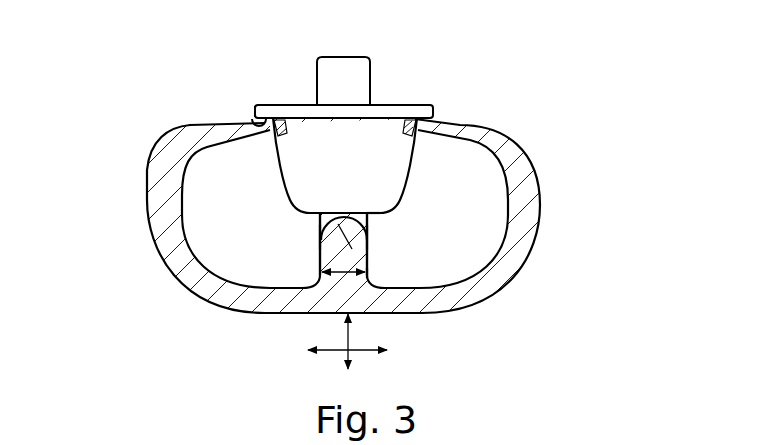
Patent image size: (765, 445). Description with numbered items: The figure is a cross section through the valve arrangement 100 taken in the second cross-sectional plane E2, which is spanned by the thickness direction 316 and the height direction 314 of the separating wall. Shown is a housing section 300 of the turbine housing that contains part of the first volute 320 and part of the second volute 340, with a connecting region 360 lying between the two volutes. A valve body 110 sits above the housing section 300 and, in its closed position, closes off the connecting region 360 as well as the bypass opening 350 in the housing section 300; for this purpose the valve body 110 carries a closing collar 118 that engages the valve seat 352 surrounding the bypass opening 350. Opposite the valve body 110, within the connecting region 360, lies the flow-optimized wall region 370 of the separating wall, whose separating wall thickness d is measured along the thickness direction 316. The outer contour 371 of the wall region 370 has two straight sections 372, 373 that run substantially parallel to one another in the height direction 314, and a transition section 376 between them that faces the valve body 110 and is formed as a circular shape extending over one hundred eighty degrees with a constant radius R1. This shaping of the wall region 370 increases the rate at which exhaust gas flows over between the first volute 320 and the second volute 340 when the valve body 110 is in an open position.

The valve arrangement 100 is at (211, 89).
The valve body 110 is at (434, 103).
The closing collar 118 is at (263, 107).
The housing section 300 is at (535, 222).
The height direction 314 is at (347, 327).
The thickness direction 316 is at (366, 351).
The first volute 320 is at (193, 188).
The second volute 340 is at (493, 178).
The bypass opening 350 is at (268, 134).
The valve seat 352 is at (261, 124).
The connecting region 360 is at (372, 227).
The wall region 370 is at (320, 265).
The outer contour 371 is at (370, 272).
The first straight section 372 is at (320, 239).
The second straight section 373 is at (369, 241).
The transition section 376 is at (372, 211).
The radius R1 is at (338, 223).
The separating wall thickness d is at (343, 287).
The second cross-sectional plane E2 is at (368, 332).